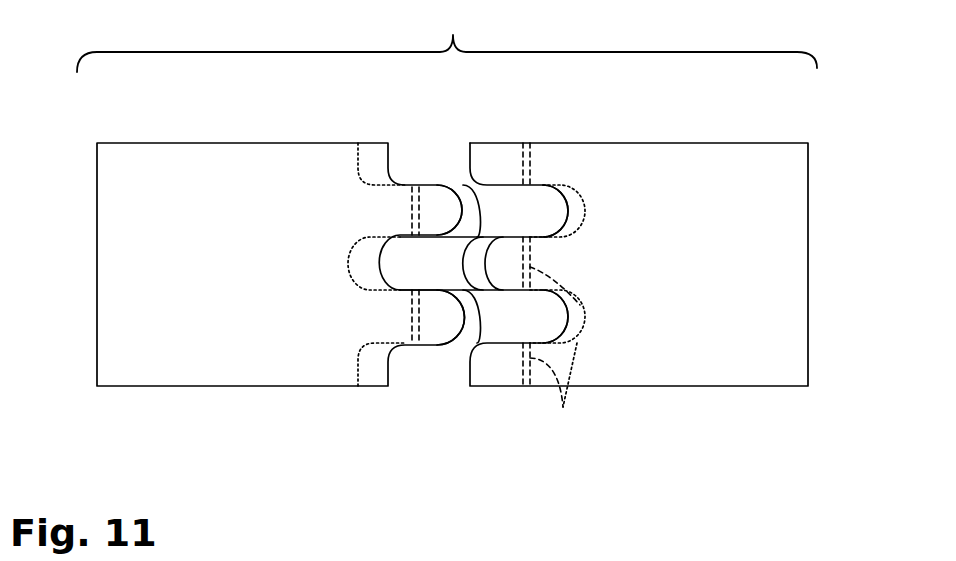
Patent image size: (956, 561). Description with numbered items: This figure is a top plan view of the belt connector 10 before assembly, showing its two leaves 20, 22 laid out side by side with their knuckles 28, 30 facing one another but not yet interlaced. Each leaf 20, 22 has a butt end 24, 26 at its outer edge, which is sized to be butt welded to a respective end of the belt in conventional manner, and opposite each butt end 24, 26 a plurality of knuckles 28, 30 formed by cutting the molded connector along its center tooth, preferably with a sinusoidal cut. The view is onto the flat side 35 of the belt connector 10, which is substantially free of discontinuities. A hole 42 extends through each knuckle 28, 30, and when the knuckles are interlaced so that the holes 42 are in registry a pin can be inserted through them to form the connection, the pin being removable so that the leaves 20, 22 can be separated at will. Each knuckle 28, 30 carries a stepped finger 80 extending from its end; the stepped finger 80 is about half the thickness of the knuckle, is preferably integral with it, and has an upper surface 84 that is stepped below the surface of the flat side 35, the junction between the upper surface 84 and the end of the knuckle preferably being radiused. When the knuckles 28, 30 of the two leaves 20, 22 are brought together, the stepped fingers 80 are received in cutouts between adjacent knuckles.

The belt connector 10 is at (447, 37).
The leaf 20 is at (193, 390).
The leaf 22 is at (684, 390).
The butt end 24 is at (97, 212).
The butt end 26 is at (808, 205).
The knuckles 28 is at (443, 215).
The knuckles 30 is at (505, 260).
The flat side 35 is at (190, 200).
The hole 42 is at (412, 205).
The stepped finger 80 is at (476, 139).
The upper surface 84 is at (475, 165).